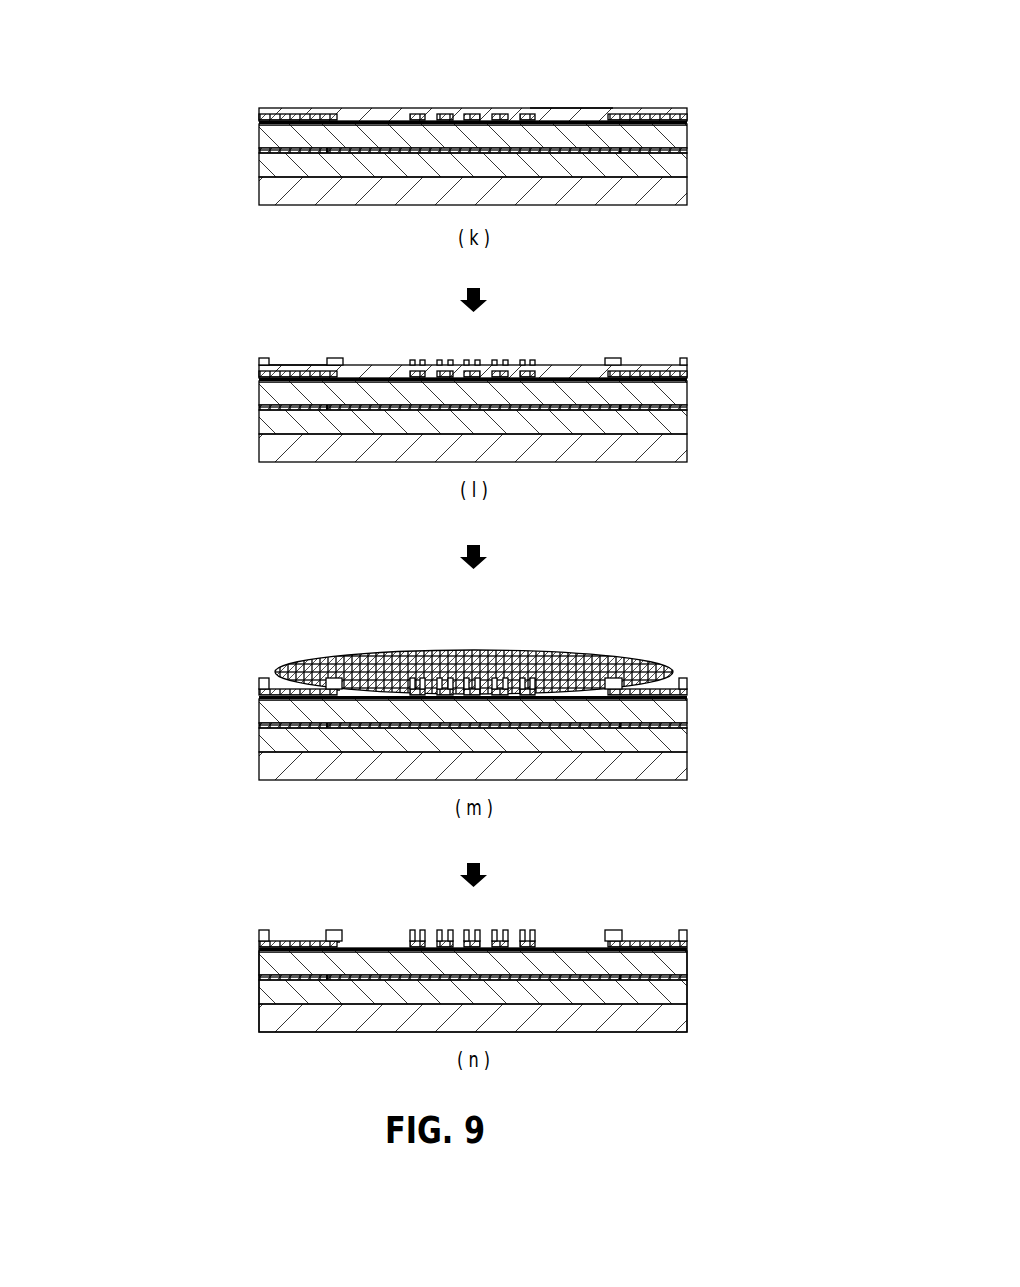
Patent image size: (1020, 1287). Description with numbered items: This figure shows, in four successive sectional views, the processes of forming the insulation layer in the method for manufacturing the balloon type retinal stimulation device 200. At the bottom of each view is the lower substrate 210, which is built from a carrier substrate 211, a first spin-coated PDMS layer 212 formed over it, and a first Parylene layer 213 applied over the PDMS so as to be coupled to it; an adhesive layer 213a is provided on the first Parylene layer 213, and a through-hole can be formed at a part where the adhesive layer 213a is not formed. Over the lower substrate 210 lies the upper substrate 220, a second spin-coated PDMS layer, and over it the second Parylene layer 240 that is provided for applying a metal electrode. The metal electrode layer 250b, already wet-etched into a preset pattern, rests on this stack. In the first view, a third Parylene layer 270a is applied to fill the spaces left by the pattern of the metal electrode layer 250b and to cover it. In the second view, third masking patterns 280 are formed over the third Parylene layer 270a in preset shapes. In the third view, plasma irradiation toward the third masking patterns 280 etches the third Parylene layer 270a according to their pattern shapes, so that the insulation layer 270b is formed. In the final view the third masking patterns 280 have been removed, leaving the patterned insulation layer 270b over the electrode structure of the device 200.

The balloon type retinal stimulation device 200 is at (687, 910).
The lower substrate 210 is at (403, 589).
The carrier substrate 211 is at (435, 610).
The first spin-coated PDMS layer 212 is at (435, 585).
The first Parylene layer 213 is at (435, 609).
The adhesive layer 213a is at (402, 561).
The upper substrate 220 is at (432, 538).
The second Parylene layer 240 is at (432, 509).
The metal electrode layer 250b is at (613, 103).
The third Parylene layer 270a is at (357, 113).
The insulation layer 270b is at (410, 688).
The third masking patterns 280 is at (340, 358).